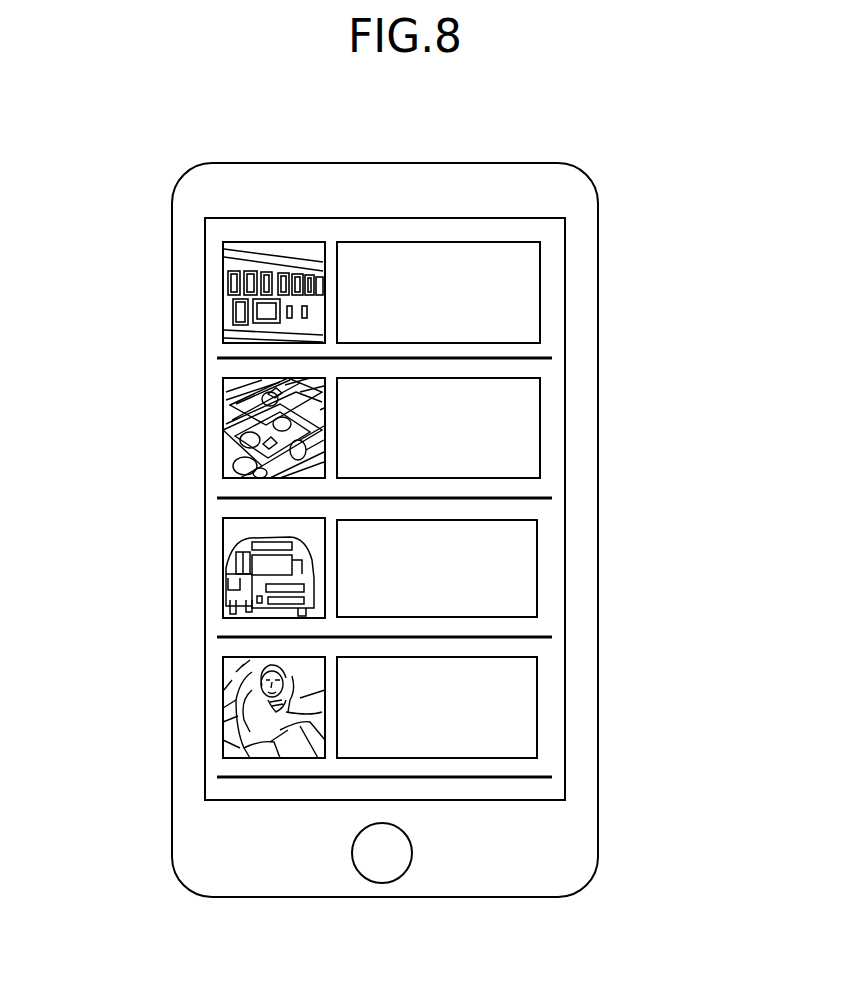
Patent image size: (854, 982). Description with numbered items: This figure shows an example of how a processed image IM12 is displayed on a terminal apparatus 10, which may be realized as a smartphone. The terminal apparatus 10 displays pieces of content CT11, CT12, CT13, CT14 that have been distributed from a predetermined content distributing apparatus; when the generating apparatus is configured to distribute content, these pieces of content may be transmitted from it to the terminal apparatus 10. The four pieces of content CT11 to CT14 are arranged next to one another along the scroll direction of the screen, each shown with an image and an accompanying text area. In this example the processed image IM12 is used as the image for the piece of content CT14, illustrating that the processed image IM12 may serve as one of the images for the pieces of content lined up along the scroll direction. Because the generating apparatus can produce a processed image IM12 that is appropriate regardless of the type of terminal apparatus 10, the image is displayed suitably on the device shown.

The terminal apparatus 10 is at (493, 163).
The piece of content CT11 is at (541, 283).
The piece of content CT12 is at (541, 432).
The piece of content CT13 is at (539, 567).
The piece of content CT14 is at (539, 713).
The processed image IM12 is at (223, 704).